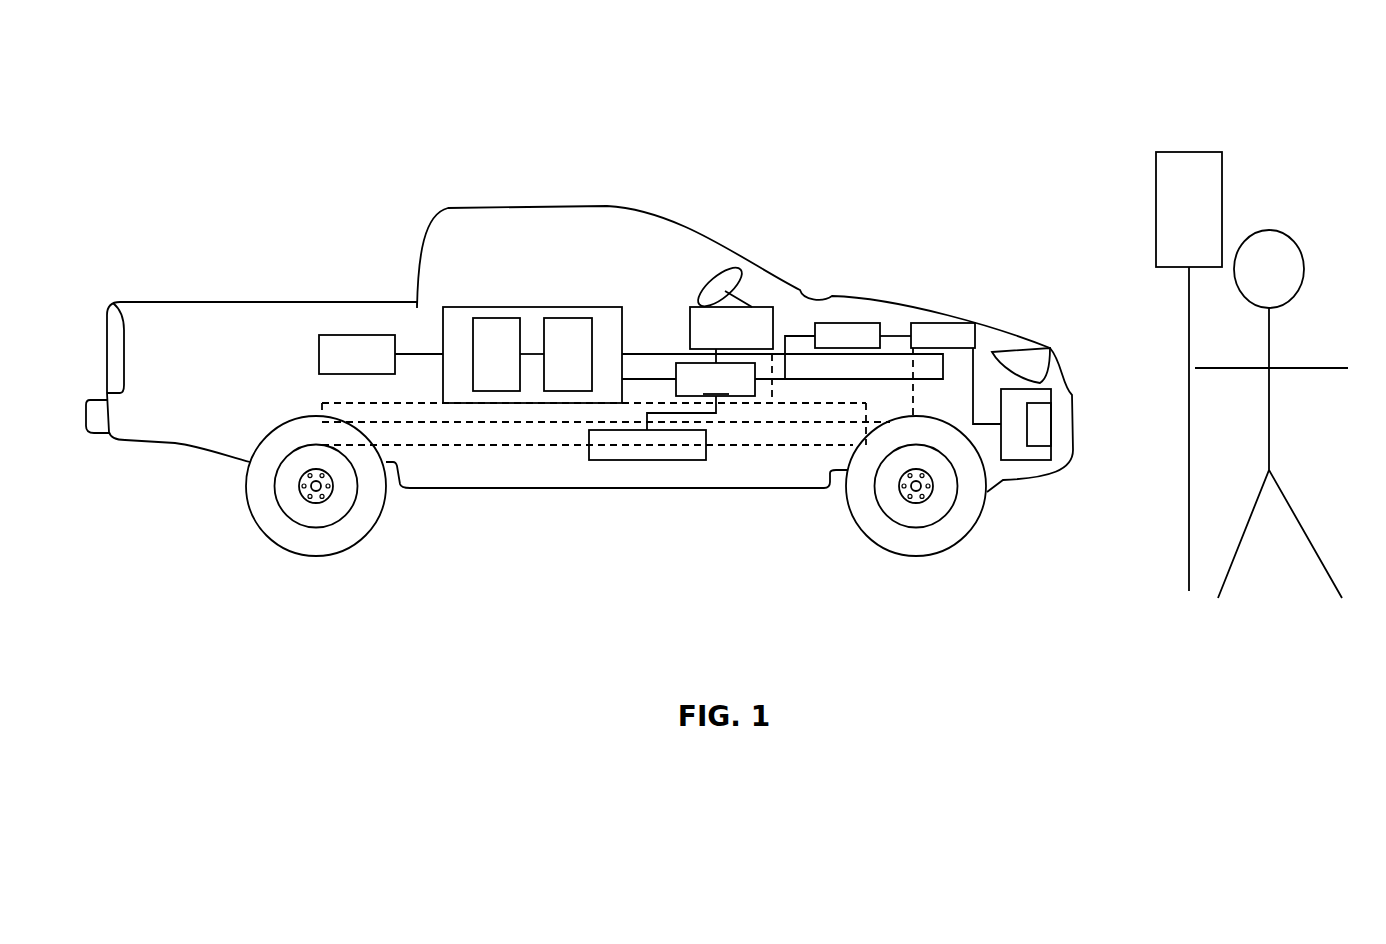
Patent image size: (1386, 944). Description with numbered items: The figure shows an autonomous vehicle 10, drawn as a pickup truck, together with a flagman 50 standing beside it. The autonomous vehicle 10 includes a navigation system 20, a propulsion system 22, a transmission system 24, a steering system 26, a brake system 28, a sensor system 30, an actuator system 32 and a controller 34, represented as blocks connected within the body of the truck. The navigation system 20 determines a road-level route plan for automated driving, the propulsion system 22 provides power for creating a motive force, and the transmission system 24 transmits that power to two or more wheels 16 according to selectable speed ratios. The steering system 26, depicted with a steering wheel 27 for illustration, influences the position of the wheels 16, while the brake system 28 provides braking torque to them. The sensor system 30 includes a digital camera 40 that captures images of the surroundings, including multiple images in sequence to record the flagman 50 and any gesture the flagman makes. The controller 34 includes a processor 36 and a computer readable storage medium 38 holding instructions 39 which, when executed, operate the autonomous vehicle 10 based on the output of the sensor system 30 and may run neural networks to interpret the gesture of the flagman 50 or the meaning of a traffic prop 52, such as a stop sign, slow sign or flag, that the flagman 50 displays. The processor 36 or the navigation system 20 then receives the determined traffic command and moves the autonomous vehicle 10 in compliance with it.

The autonomous vehicle 10 is at (181, 96).
The wheels 16 is at (315, 556).
The navigation system 20 is at (357, 335).
The propulsion system 22 is at (942, 323).
The transmission system 24 is at (846, 323).
The steering system 26 is at (763, 307).
The steering wheel 27 is at (712, 280).
The brake system 28 is at (634, 460).
The sensor system 30 is at (1056, 322).
The actuator system 32 is at (701, 396).
The controller 34 is at (520, 307).
The processor 36 is at (495, 318).
The computer readable storage medium 38 is at (568, 318).
The instructions 39 is at (568, 391).
The digital camera 40 is at (1027, 460).
The flagman 50 is at (1270, 231).
The traffic prop 52 is at (1190, 152).